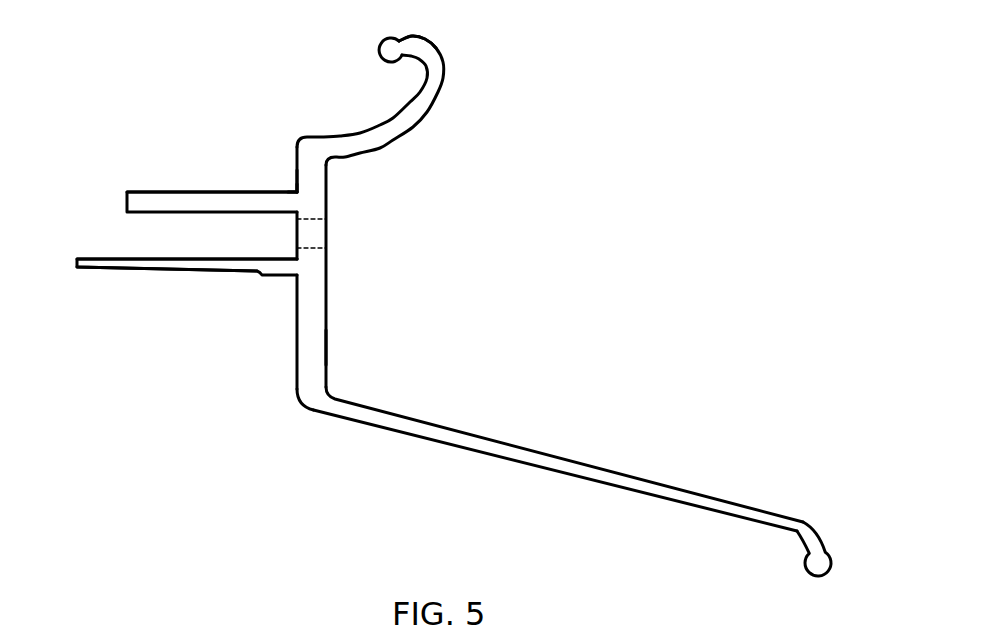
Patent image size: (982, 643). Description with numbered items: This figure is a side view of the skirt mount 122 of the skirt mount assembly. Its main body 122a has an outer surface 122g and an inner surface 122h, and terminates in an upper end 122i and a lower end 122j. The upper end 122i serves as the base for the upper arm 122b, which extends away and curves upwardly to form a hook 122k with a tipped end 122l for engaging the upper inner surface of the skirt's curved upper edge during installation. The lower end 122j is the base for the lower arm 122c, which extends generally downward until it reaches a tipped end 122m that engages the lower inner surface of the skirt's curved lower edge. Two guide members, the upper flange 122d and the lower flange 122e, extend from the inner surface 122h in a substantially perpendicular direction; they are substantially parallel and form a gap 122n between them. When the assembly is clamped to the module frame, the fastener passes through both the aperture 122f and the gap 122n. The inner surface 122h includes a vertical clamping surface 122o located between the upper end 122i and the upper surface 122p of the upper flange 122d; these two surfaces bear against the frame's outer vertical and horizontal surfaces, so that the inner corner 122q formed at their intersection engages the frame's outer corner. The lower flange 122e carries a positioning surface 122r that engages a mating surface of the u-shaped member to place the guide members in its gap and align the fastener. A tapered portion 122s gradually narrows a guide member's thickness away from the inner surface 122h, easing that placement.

The skirt mount 122 is at (600, 274).
The main body 122a is at (326, 290).
The upper arm 122b is at (430, 108).
The lower arm 122c is at (523, 465).
The upper flange 122d is at (127, 202).
The lower flange 122e is at (77, 262).
The aperture 122f is at (326, 237).
The outer surface 122g is at (326, 347).
The inner surface 122h is at (297, 347).
The upper end 122i is at (297, 176).
The lower end 122j is at (303, 400).
The hook 122k is at (424, 40).
The tipped end 122l is at (380, 50).
The tipped end 122m is at (820, 577).
The gap 122n is at (115, 212).
The vertical clamping surface 122o is at (297, 184).
The upper surface 122p is at (208, 192).
The inner corner 122q is at (295, 190).
The positioning surface 122r is at (160, 259).
The tapered portion 122s is at (264, 283).